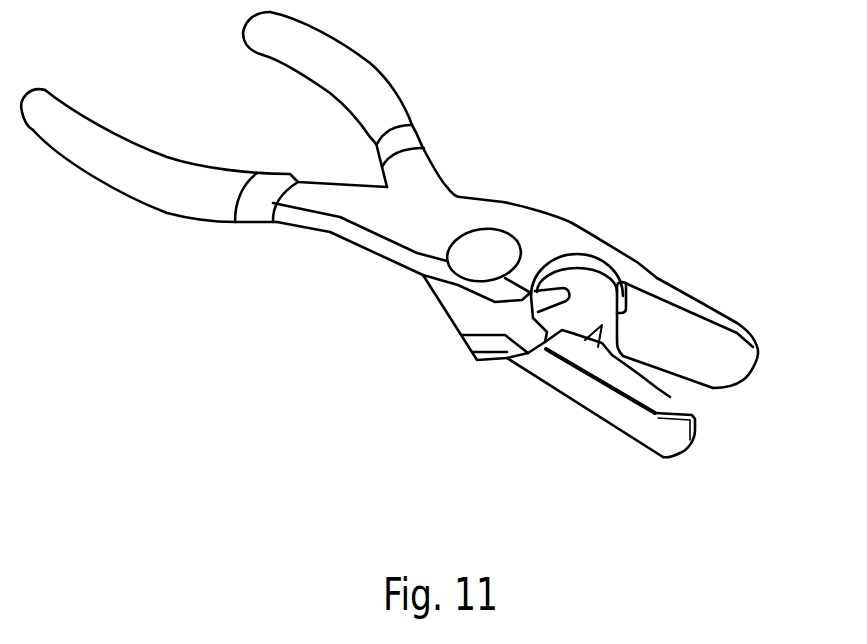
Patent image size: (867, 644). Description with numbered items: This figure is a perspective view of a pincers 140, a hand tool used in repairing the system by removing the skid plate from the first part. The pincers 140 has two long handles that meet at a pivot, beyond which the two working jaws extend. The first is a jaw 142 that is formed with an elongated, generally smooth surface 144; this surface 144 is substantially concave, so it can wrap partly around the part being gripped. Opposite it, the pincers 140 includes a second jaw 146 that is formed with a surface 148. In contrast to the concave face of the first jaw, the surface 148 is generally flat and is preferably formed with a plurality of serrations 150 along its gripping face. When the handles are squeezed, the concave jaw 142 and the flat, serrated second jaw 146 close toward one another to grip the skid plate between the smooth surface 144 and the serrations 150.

The pincers 140 is at (300, 272).
The jaw 142 is at (658, 287).
The surface 144 is at (720, 373).
The second jaw 146 is at (596, 392).
The surface 148 is at (668, 390).
The serrations 150 is at (570, 332).